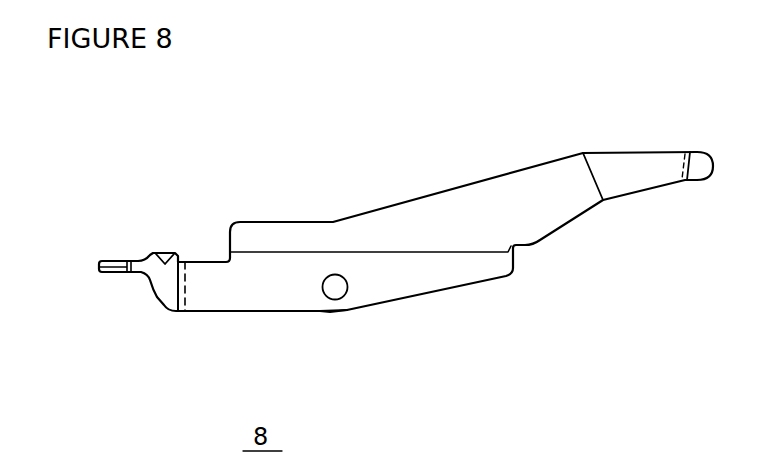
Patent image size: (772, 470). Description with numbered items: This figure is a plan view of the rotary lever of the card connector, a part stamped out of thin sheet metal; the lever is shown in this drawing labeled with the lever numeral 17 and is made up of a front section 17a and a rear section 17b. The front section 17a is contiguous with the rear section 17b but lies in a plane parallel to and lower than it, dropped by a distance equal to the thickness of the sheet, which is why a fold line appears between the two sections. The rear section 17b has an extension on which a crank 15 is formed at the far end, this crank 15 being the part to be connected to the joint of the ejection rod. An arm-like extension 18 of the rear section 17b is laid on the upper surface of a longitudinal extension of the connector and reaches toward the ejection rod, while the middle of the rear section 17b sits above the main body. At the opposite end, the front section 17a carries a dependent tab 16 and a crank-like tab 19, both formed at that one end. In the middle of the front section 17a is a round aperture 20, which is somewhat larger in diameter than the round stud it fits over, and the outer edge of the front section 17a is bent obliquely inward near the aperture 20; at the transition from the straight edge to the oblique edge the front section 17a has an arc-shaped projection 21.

The crank 15 is at (693, 155).
The dependent tab 16 is at (158, 250).
The lever body 17 is at (373, 215).
The front section 17a is at (242, 303).
The rear section 17b is at (283, 237).
The arm-like extension 18 is at (539, 188).
The crank-like tab 19 is at (108, 260).
The round aperture 20 is at (338, 290).
The arc-shaped projection 21 is at (333, 315).